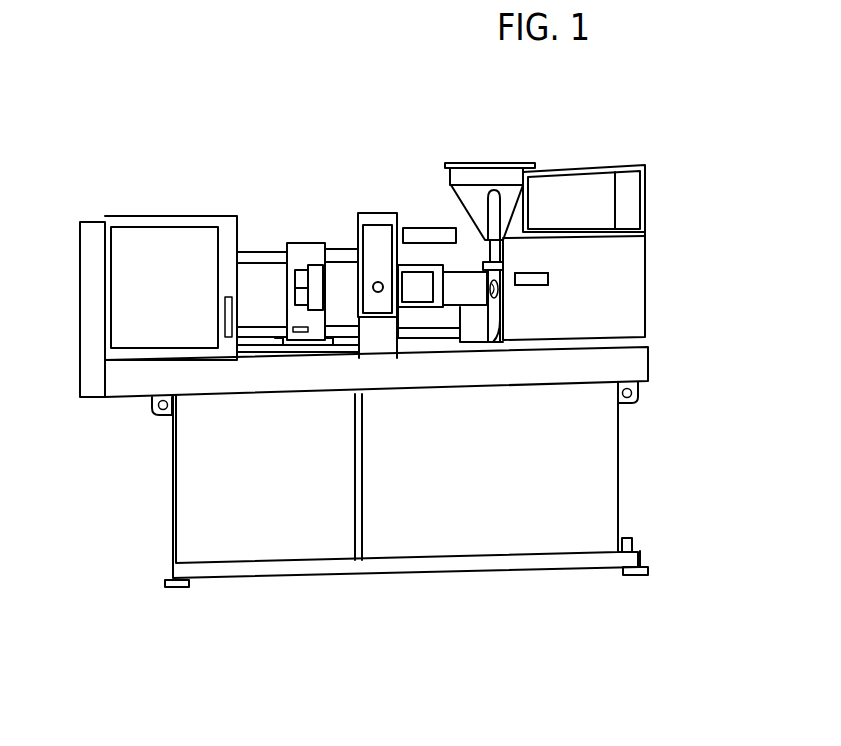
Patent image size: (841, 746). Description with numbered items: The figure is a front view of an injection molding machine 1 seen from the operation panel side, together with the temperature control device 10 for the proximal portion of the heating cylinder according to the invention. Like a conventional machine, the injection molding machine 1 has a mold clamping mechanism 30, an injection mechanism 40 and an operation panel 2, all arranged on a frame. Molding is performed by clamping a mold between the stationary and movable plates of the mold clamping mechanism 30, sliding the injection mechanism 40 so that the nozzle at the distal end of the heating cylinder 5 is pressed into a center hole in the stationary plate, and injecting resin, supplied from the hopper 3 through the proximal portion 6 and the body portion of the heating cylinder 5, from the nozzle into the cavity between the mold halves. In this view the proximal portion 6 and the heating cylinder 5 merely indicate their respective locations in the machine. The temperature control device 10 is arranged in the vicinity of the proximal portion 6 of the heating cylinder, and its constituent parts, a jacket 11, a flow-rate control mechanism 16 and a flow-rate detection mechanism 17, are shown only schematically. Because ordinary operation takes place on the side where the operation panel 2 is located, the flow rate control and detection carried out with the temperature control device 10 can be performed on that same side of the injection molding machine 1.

The injection molding machine 1 is at (366, 628).
The operation panel 2 is at (376, 234).
The hopper 3 is at (481, 182).
The heating cylinder 5 is at (467, 304).
The proximal portion 6 is at (492, 320).
The temperature control device 10 is at (510, 268).
The jacket 11 is at (483, 284).
The flow-rate control mechanism 16 is at (510, 297).
The flow-rate detection mechanism 17 is at (601, 292).
The mold clamping mechanism 30 is at (270, 218).
The injection mechanism 40 is at (430, 176).